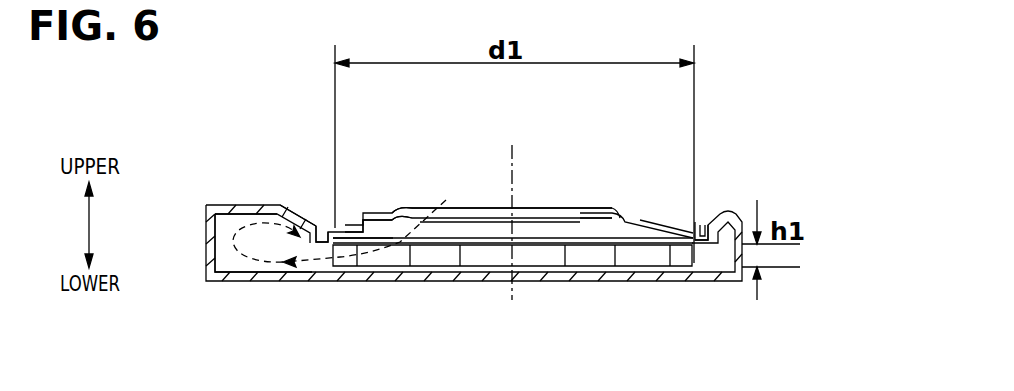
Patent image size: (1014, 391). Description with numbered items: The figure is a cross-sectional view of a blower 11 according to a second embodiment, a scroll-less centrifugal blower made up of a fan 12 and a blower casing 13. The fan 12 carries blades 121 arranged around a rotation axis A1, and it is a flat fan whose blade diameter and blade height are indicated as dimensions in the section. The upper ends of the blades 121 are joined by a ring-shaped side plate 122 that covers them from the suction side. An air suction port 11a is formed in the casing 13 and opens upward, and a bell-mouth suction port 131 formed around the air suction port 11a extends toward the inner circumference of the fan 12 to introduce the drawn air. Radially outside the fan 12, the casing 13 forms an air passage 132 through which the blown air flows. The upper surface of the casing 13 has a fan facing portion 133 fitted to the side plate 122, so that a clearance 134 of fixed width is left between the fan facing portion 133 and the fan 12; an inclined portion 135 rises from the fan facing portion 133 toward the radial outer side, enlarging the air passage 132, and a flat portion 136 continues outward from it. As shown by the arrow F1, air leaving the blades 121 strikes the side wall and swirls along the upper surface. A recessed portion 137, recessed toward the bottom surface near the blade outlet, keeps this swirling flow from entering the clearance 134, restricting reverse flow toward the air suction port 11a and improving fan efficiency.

The blower 11 is at (190, 167).
The air suction port 11a is at (494, 210).
The fan 12 is at (597, 210).
The blower casing 13 is at (206, 246).
The blades 121 is at (425, 256).
The side plate 122 is at (575, 212).
The suction port 131 is at (430, 205).
The air passage 132 is at (233, 260).
The fan facing portion 133 is at (372, 224).
The clearance 134 is at (354, 226).
The inclined portion 135 is at (298, 203).
The flat portion 136 is at (243, 203).
The recessed portion 137 is at (317, 224).
The rotation axis A1 is at (514, 176).
The arrow F1 is at (446, 200).